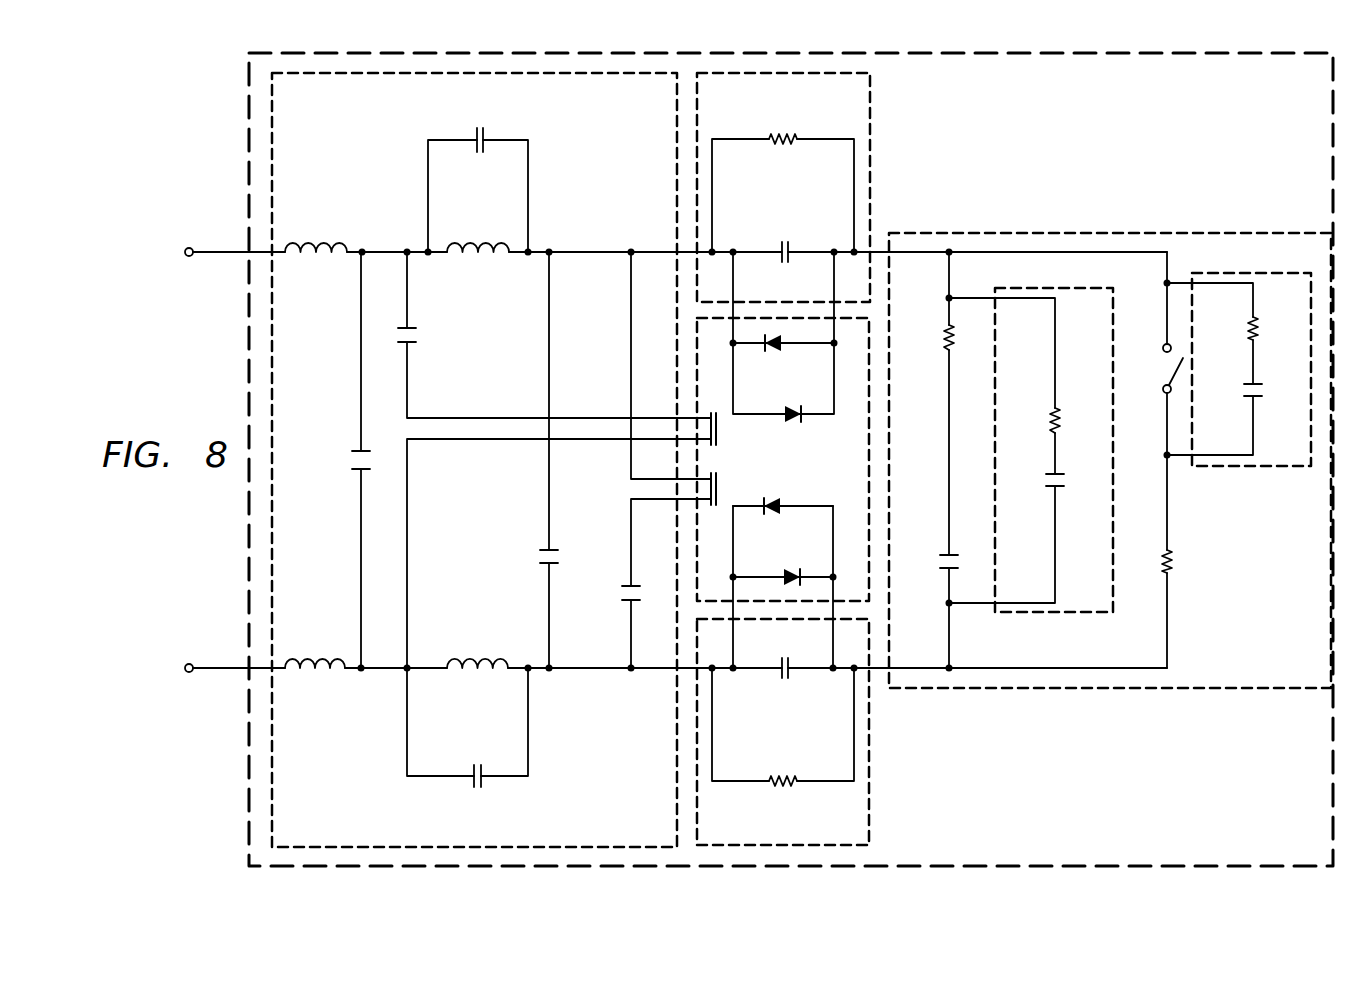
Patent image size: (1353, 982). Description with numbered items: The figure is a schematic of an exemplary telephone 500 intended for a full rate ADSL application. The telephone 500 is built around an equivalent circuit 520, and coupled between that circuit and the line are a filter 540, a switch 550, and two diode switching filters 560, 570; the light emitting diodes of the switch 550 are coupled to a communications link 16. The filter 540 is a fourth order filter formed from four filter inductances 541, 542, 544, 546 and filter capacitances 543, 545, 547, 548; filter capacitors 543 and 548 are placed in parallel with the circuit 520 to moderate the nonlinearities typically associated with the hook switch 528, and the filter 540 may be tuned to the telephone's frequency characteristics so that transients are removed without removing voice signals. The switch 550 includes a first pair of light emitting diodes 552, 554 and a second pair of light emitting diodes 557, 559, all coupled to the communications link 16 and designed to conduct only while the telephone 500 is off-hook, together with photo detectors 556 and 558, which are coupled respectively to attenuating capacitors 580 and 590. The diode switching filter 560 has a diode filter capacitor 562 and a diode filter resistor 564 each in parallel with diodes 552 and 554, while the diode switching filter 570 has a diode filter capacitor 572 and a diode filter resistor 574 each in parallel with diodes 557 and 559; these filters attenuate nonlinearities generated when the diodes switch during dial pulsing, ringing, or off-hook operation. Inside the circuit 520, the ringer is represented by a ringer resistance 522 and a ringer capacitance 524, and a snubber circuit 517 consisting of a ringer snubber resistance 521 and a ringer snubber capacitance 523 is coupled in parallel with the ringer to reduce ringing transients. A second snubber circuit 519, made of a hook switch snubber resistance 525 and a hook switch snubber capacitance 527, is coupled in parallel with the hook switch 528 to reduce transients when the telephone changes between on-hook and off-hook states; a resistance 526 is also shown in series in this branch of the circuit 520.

The telephone 500 is at (249, 95).
The communications link 16 is at (213, 252).
The filter 540 is at (388, 153).
The filter inductance 541 is at (323, 256).
The filter inductance 542 is at (323, 672).
The filter capacitance 543 is at (352, 460).
The filter inductance 544 is at (470, 256).
The filter capacitance 545 is at (484, 153).
The filter inductance 546 is at (488, 672).
The filter capacitance 547 is at (479, 788).
The filter capacitance 548 is at (540, 556).
The attenuating capacitance 580 is at (416, 336).
The attenuating capacitance 590 is at (622, 594).
The switch 550 is at (852, 470).
The light emitting diode 552 is at (770, 351).
The light emitting diode 554 is at (797, 405).
The photo detector 556 is at (722, 430).
The light emitting diode 557 is at (770, 515).
The photo detector 558 is at (722, 490).
The light emitting diode 559 is at (797, 569).
The diode switching filter 560 is at (870, 130).
The diode filter capacitor 562 is at (785, 240).
The diode filter resistor 564 is at (787, 134).
The diode switching filter 570 is at (870, 800).
The diode filter capacitor 572 is at (785, 680).
The diode filter resistor 574 is at (788, 786).
The equivalent circuit 520 is at (1028, 688).
The snubber circuit 517 is at (1052, 612).
The snubber circuit 519 is at (1245, 466).
The ringer snubber resistance 521 is at (1050, 420).
The ringer resistance 522 is at (945, 338).
The ringer snubber capacitance 523 is at (1046, 480).
The ringer capacitance 524 is at (940, 561).
The hook switch snubber resistance 525 is at (1250, 328).
The off-hook resistor ROH 526 is at (1162, 559).
The hook switch snubber capacitance 527 is at (1244, 390).
The hook switch 528 is at (1165, 370).